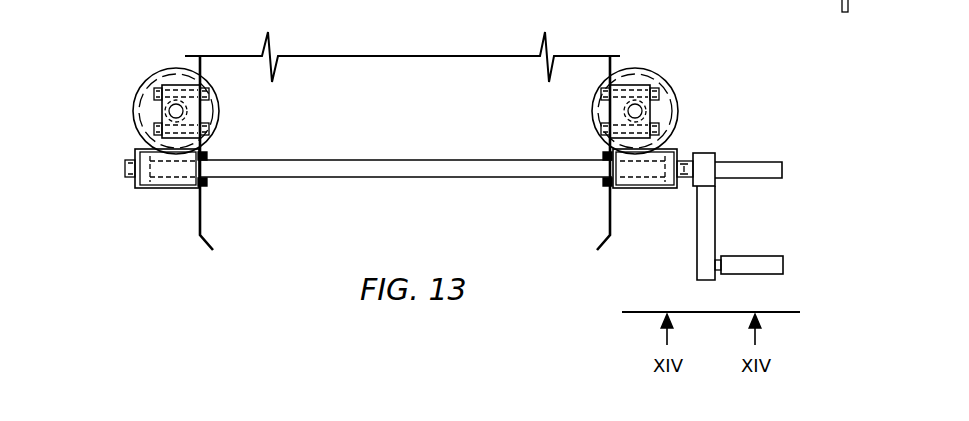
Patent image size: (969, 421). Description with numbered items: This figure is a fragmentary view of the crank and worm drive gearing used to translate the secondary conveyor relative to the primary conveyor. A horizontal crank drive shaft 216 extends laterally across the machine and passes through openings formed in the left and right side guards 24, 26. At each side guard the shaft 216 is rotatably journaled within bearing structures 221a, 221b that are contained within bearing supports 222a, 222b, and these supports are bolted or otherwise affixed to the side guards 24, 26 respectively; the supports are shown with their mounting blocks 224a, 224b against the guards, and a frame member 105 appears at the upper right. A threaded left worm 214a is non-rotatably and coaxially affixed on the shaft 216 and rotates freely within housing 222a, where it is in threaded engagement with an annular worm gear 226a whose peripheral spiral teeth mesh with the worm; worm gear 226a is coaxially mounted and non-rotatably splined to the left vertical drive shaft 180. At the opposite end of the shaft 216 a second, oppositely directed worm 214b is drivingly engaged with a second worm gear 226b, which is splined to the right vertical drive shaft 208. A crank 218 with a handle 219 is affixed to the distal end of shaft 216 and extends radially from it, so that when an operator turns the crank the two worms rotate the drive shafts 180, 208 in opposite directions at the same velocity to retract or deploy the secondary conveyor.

The left side guard 24 is at (607, 227).
The right side guard 26 is at (203, 222).
The frame member 105 is at (843, 4).
The left vertical drive shaft 180 is at (653, 107).
The right vertical drive shaft 208 is at (168, 108).
The left worm 214a is at (607, 153).
The second worm 214b is at (188, 186).
The horizontal crank drive shaft 216 is at (472, 178).
The crank 218 is at (716, 203).
The handle 219 is at (775, 162).
The bearing structure 221a is at (647, 188).
The bearing structure 221b is at (136, 182).
The bearing support housing 222a is at (632, 190).
The bearing support 222b is at (147, 190).
The right mounting block 224a is at (637, 85).
The left mounting block 224b is at (175, 84).
The worm gear 226a is at (681, 113).
The second worm gear 226b is at (132, 112).